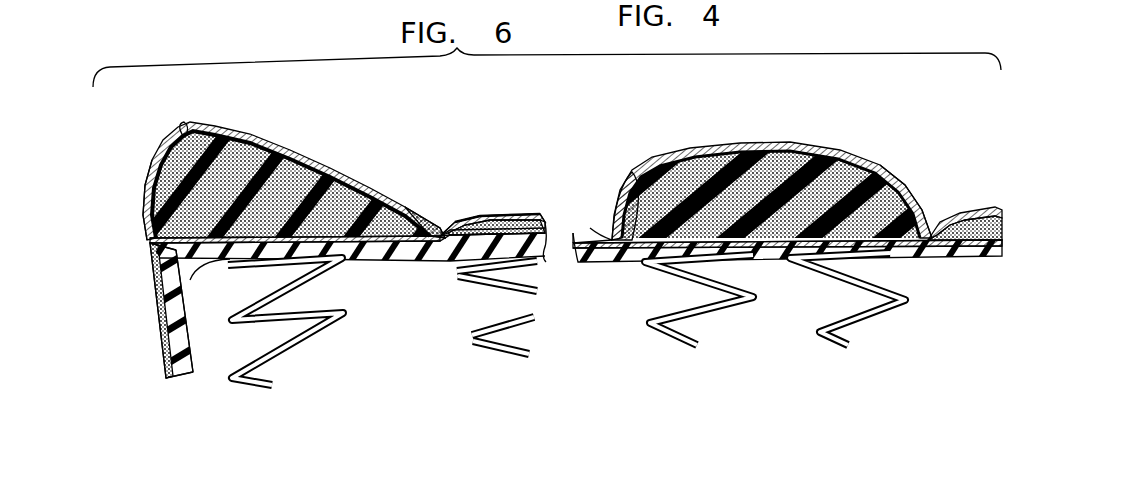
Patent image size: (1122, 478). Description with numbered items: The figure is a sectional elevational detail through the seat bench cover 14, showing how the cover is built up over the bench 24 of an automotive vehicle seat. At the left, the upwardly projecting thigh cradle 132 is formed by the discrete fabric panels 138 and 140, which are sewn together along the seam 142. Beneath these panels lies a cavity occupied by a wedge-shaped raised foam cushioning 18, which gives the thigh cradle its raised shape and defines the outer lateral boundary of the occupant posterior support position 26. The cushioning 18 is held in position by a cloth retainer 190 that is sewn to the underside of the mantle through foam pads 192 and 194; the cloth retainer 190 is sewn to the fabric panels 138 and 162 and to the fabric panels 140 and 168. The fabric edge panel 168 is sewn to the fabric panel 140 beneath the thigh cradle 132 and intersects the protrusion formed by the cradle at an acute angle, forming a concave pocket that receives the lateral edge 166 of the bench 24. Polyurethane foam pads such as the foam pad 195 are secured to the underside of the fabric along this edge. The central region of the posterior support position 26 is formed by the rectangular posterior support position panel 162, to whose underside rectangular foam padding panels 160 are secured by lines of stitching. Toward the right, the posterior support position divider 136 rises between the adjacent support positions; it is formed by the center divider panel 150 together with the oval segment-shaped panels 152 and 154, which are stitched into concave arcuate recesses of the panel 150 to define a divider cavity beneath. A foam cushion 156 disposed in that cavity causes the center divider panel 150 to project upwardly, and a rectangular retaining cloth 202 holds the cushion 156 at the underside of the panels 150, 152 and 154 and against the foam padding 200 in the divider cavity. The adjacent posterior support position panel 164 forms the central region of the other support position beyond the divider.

The seat bench cover 14 is at (484, 156).
The raised foam cushioning 18 is at (325, 170).
The bench 24 is at (152, 250).
The occupant posterior support position 26 is at (494, 208).
The thigh cradle 132 is at (255, 122).
The posterior support position divider 136 is at (798, 126).
The fabric panel 138 is at (300, 143).
The fabric panel 140 is at (158, 145).
The seam 142 is at (180, 125).
The center divider panel 150 is at (843, 140).
The oval segment-shaped panel 152 is at (623, 220).
The oval segment-shaped panel 154 is at (930, 210).
The foam cushion 156 is at (887, 160).
The foam padding panel 160 is at (541, 228).
The posterior support position panel 162 is at (505, 217).
The posterior support position panel 164 is at (977, 203).
The lateral edge of the bench 166 is at (167, 364).
The fabric edge panel 168 is at (153, 287).
The cloth retainer 190 is at (360, 232).
The foam pad 192 is at (383, 187).
The foam pad 194 is at (183, 133).
The foam pad 195 is at (160, 317).
The foam padding 200 is at (717, 152).
The rectangular retaining cloth 202 is at (780, 233).